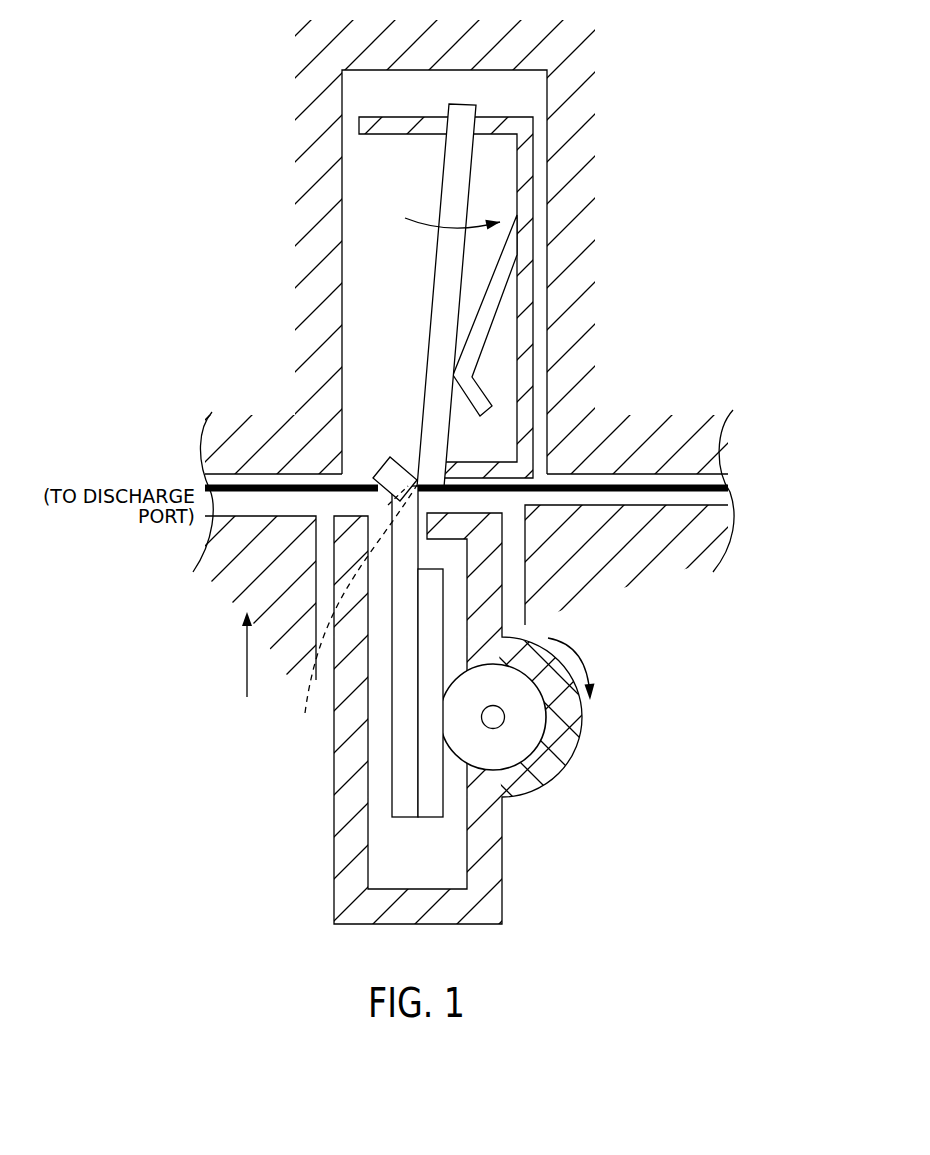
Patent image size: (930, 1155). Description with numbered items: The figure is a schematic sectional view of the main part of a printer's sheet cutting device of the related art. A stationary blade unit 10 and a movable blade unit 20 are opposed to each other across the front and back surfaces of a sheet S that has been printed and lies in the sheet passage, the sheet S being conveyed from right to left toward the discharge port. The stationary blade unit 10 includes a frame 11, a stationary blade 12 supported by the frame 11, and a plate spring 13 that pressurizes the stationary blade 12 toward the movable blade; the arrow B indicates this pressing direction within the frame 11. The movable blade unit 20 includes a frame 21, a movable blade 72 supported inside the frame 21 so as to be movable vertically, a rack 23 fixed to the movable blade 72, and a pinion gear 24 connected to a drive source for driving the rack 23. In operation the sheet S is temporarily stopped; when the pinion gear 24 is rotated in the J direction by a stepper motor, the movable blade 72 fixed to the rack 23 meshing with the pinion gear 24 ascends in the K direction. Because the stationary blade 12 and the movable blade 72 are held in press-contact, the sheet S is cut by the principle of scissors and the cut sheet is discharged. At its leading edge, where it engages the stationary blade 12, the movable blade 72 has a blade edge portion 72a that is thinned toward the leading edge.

The stationary blade unit 10 is at (642, 273).
The frame 11 is at (528, 207).
The stationary blade 12 is at (440, 300).
The plate spring 13 is at (483, 327).
The movable blade unit 20 is at (253, 733).
The frame 21 is at (337, 858).
The rack 23 is at (435, 800).
The pinion gear 24 is at (505, 755).
The movable blade 72 is at (397, 755).
The blade edge portion 72a is at (349, 599).
The sheet S is at (680, 492).
The direction B is at (444, 218).
The J direction J is at (571, 669).
The K direction K is at (238, 654).